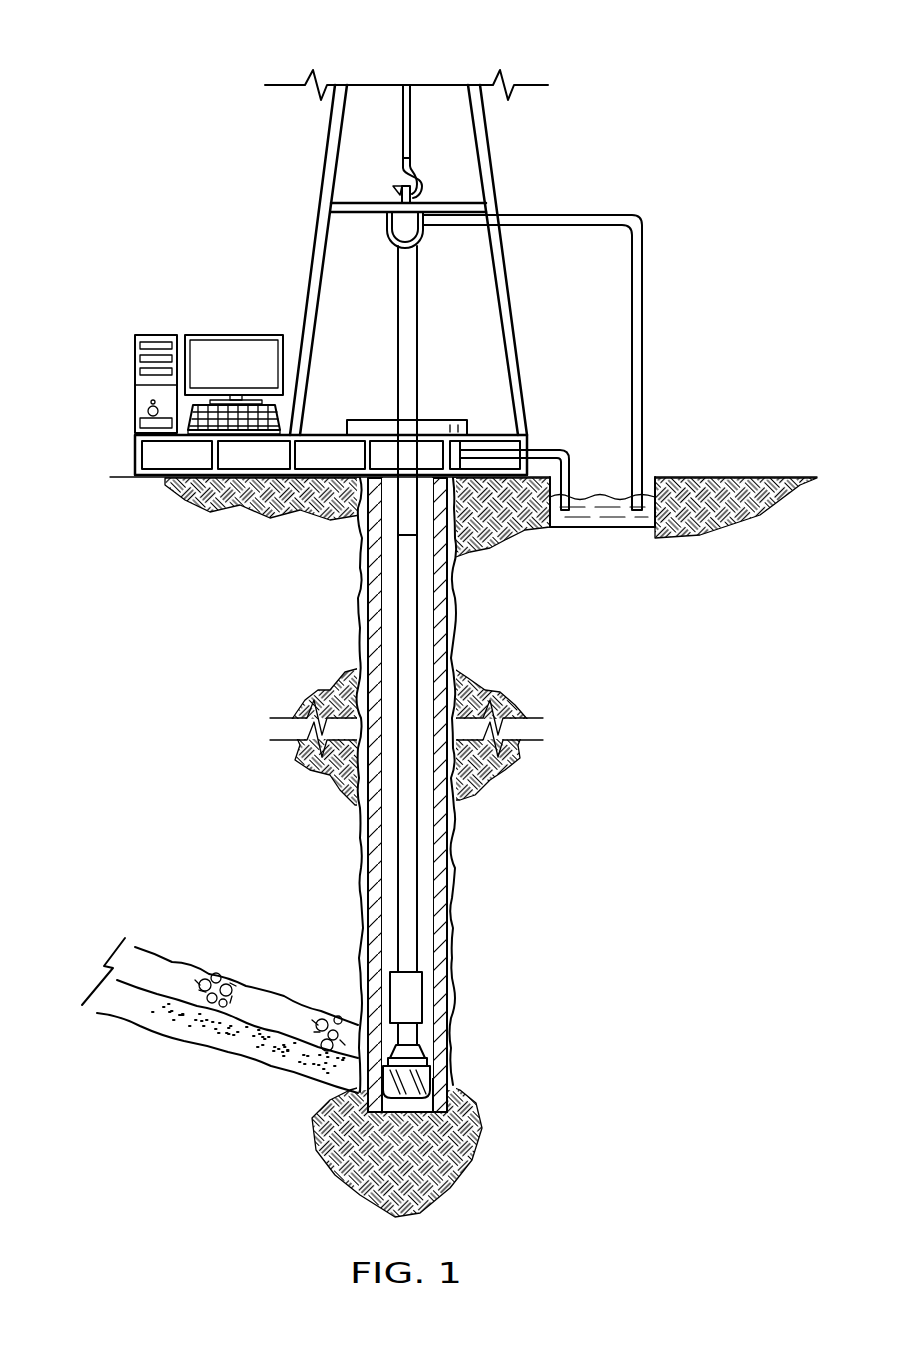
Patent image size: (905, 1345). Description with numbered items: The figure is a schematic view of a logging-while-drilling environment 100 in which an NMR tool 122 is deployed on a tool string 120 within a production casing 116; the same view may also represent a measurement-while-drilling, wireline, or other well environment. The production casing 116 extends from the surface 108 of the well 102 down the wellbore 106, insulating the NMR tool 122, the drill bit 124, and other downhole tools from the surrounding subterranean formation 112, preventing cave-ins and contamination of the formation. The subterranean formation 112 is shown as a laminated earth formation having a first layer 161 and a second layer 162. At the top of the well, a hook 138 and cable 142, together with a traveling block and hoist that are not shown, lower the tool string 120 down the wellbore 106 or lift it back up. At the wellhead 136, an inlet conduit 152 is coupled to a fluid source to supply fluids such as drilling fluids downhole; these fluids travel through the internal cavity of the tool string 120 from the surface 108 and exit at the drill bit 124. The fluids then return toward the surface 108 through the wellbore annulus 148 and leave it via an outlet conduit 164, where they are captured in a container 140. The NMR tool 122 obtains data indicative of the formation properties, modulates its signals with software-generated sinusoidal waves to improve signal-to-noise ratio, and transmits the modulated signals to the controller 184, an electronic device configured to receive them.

The logging-while-drilling environment 100 is at (229, 70).
The well 102 is at (437, 407).
The wellbore 106 is at (455, 858).
The surface 108 is at (790, 476).
The subterranean formation 112 is at (200, 1015).
The production casing 116 is at (444, 908).
The tool string 120 is at (402, 610).
The NMR tool 122 is at (413, 997).
The drill bit 124 is at (430, 1062).
The wellhead 136 is at (368, 420).
The hook 138 is at (421, 185).
The container 140 is at (607, 530).
The cable 142 is at (402, 147).
The wellbore annulus 148 is at (388, 853).
The inlet conduit 152 is at (588, 214).
The first layer 161 is at (258, 998).
The second layer 162 is at (258, 1050).
The outlet conduit 164 is at (545, 448).
The controller 184 is at (155, 335).